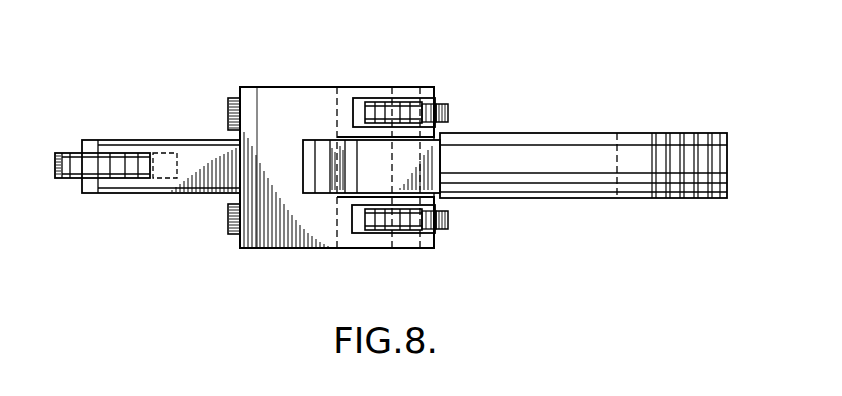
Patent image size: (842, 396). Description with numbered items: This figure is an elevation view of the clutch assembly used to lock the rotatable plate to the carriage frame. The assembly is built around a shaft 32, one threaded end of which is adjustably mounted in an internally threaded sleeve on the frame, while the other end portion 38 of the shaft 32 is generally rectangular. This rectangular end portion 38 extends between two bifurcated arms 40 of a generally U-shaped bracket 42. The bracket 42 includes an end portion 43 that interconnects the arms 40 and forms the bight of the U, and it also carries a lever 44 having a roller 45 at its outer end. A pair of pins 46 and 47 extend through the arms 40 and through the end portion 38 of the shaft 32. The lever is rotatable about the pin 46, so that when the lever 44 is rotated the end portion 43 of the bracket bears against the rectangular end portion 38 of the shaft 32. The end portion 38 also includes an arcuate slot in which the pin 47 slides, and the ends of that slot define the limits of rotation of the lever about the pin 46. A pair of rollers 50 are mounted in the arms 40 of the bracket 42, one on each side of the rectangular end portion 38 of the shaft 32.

The shaft 32 is at (565, 181).
The end portion of the shaft 38 is at (328, 196).
The bifurcated arms 40 is at (368, 88).
The U-shaped bracket 42 is at (283, 93).
The end portion of the bracket 43 is at (292, 162).
The lever 44 is at (199, 182).
The roller 45 is at (68, 152).
The pin 46 is at (373, 105).
The pin 47 is at (417, 93).
The rollers 50 is at (450, 110).